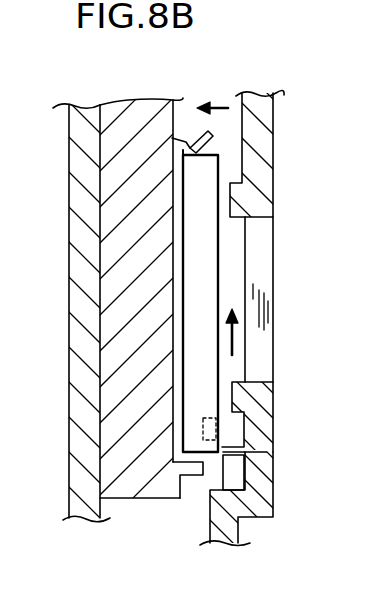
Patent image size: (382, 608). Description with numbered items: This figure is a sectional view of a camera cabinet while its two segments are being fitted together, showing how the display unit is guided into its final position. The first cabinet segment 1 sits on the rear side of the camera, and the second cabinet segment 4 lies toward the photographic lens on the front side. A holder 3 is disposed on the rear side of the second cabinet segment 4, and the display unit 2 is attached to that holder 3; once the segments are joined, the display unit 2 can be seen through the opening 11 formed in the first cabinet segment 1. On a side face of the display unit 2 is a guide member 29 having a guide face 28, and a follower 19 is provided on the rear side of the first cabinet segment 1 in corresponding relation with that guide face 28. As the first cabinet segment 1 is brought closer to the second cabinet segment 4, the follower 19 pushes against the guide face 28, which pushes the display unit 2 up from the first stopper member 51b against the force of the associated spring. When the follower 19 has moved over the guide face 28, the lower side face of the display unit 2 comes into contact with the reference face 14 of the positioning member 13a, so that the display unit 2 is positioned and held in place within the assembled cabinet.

The first cabinet segment 1 is at (282, 136).
The display unit 2 is at (205, 262).
The holder 3 is at (135, 123).
The second cabinet segment 4 is at (82, 128).
The opening 11 is at (260, 277).
The positioning member 13a is at (228, 460).
The reference face 14 is at (267, 452).
The follower 19 is at (222, 424).
The guide face 28 is at (222, 427).
The guide member 29 is at (207, 410).
The first stopper member 51b is at (199, 471).